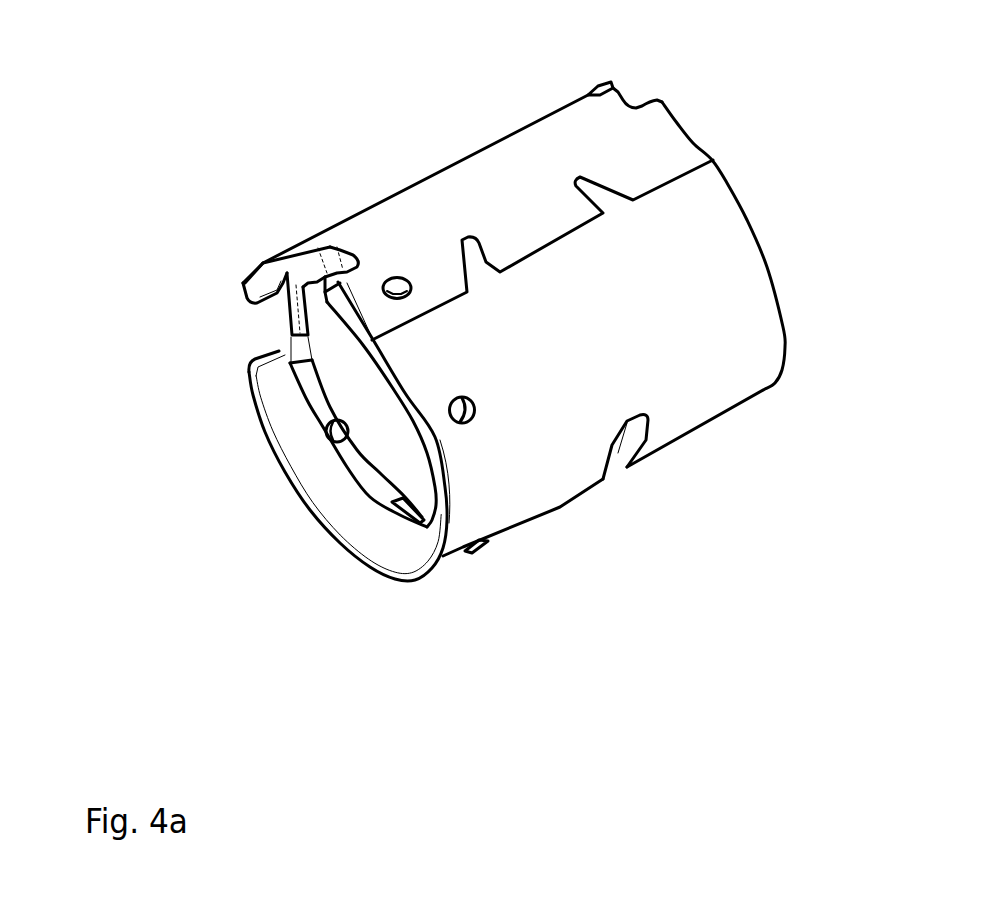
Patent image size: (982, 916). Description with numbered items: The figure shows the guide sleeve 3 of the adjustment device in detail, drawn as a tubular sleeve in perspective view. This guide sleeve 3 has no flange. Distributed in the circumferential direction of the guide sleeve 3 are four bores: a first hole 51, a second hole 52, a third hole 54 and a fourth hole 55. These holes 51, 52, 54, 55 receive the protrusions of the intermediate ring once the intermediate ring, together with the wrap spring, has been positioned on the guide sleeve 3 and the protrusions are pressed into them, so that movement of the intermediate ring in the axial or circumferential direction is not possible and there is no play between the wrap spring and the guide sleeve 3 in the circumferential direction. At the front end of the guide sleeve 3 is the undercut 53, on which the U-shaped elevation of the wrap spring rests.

The guide sleeve 3 is at (392, 100).
The first hole 51 is at (470, 422).
The second hole 52 is at (470, 553).
The undercut 53 is at (290, 350).
The third hole 54 is at (326, 437).
The fourth hole 55 is at (393, 277).